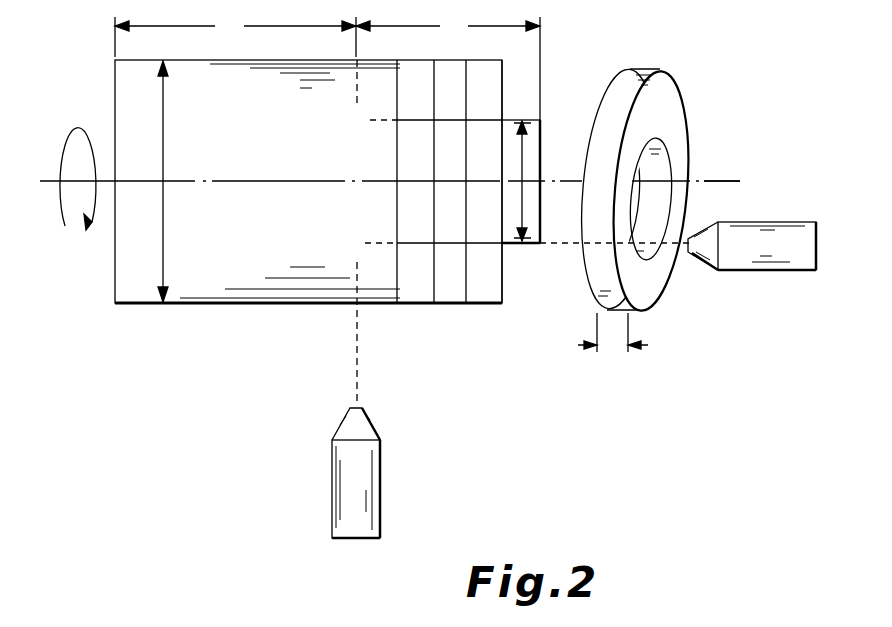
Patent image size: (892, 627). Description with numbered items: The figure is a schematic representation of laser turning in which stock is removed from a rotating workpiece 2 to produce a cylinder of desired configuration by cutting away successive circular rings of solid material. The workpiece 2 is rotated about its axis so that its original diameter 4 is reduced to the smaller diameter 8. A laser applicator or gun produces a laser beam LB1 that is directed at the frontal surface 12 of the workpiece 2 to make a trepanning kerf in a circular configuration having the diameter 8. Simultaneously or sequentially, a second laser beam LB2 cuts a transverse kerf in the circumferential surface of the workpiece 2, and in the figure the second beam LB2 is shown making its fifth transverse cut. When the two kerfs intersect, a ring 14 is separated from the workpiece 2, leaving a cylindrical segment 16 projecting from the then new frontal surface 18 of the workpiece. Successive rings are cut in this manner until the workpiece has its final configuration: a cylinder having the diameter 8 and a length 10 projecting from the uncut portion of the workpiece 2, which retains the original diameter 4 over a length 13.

The workpiece 2 is at (258, 140).
The original diameter 4 is at (159, 181).
The smaller diameter 8 is at (522, 181).
The length 10 is at (448, 67).
The frontal surface 12 is at (541, 124).
The length 13 is at (381, 186).
The ring 14 is at (678, 106).
The cylindrical segment 16 is at (510, 118).
The new frontal surface 18 is at (506, 270).
The laser beam LB1 is at (782, 272).
The second laser beam LB2 is at (380, 480).